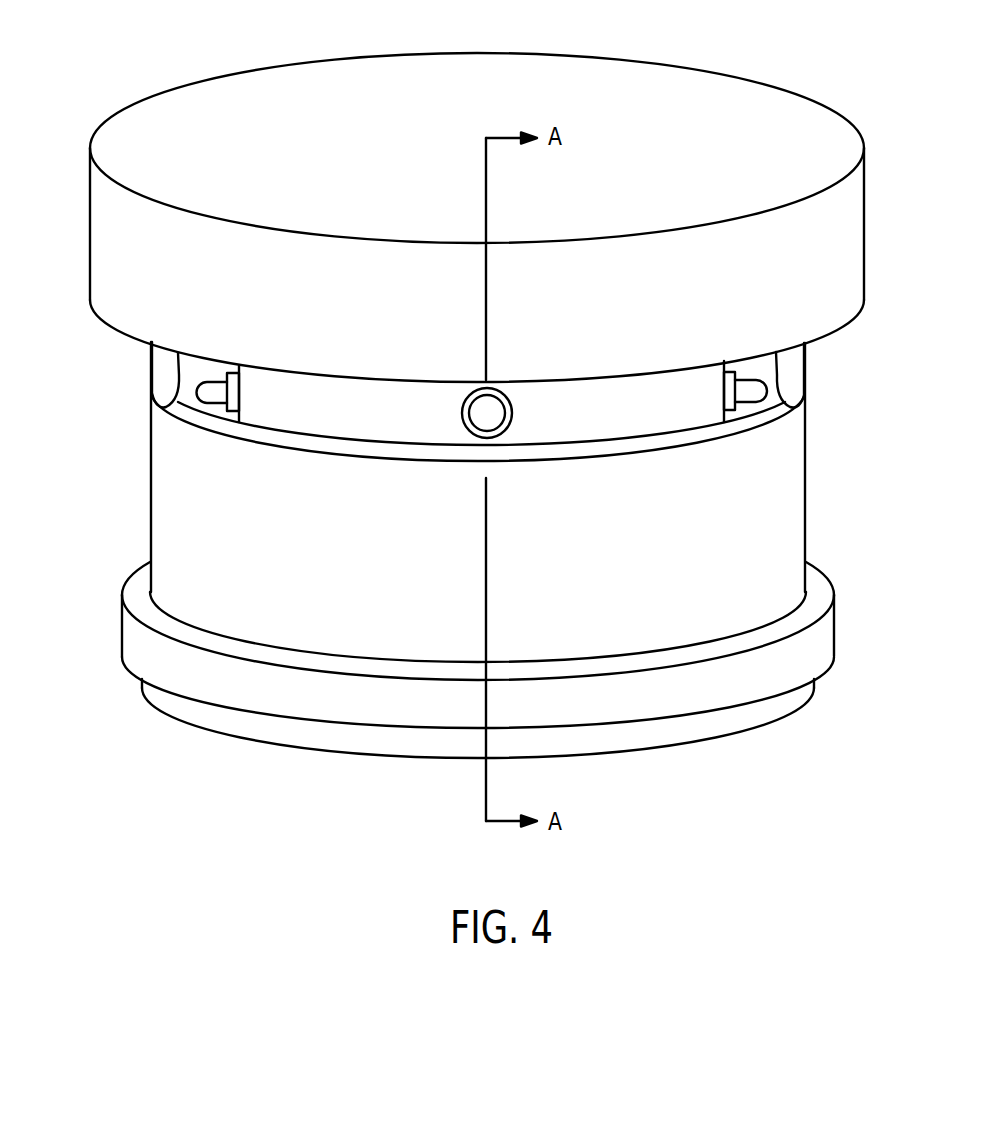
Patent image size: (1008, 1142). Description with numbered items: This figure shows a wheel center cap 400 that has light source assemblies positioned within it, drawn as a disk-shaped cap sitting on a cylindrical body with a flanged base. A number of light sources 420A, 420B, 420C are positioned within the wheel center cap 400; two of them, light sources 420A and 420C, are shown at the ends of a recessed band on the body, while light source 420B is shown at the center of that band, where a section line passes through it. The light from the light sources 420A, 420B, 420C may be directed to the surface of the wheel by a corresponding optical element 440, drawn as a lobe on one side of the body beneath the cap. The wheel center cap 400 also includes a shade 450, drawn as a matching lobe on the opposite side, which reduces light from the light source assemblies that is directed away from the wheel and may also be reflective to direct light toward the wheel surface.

The wheel center cap 400 is at (300, 77).
The light source 420A is at (217, 403).
The light source 420B is at (512, 416).
The light source 420C is at (750, 402).
The optical element 440 is at (165, 375).
The shade 450 is at (832, 326).